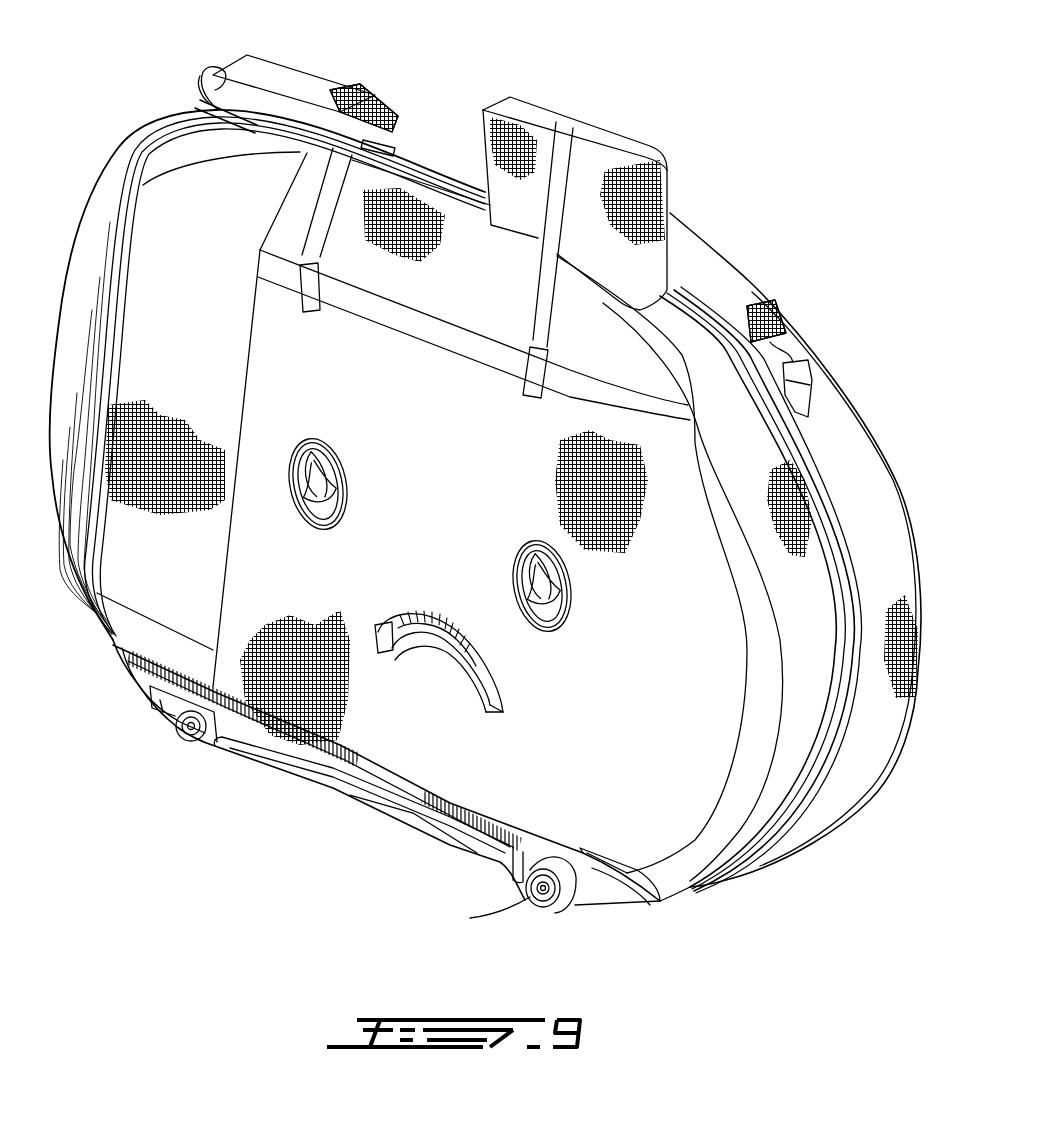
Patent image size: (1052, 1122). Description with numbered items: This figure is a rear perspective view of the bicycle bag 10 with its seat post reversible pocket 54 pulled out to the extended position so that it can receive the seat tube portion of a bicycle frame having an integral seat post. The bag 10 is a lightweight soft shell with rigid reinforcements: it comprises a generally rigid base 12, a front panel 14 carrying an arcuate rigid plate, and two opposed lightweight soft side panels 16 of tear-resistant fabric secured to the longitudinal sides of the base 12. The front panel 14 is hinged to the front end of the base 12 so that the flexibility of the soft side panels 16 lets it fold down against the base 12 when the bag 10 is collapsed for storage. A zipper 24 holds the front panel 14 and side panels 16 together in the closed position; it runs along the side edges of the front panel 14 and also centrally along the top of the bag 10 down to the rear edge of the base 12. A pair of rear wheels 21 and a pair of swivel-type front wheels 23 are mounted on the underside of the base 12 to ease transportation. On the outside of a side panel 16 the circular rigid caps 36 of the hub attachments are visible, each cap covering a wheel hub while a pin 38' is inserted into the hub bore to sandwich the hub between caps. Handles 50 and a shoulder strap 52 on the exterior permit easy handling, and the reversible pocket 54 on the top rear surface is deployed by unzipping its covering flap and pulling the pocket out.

The bag 10 is at (728, 153).
The base 12 is at (340, 788).
The front panel 14 is at (115, 145).
The side panels 16 is at (400, 222).
The rear wheels 21 is at (527, 900).
The front wheels 23 is at (182, 740).
The zipper 24 is at (122, 255).
The cap 36 is at (310, 452).
The pin of the second cap 38' is at (429, 527).
The handles 50 is at (430, 640).
The shoulder strap 52 is at (740, 298).
The reversible pocket 54 is at (650, 247).